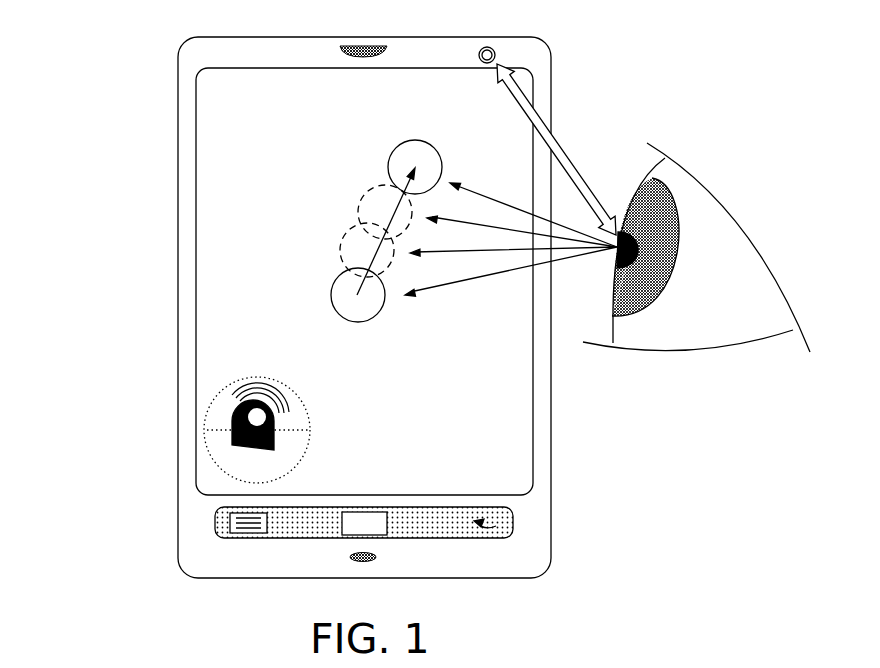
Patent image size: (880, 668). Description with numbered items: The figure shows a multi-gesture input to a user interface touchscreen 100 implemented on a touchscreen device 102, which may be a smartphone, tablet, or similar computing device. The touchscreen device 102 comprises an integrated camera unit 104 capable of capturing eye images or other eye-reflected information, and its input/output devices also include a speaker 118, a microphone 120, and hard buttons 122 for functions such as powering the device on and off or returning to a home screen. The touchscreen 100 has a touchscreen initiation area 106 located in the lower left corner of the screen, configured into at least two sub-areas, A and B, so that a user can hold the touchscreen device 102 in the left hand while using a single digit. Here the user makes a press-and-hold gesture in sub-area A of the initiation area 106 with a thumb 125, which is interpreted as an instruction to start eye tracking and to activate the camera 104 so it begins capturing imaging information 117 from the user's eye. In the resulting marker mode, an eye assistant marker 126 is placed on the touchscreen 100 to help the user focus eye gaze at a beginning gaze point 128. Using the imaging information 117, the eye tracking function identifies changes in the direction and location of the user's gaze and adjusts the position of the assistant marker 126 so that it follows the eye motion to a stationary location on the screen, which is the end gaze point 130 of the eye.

The user interface touchscreen 100 is at (196, 172).
The touchscreen device 102 is at (112, 64).
The camera unit 104 is at (494, 48).
The touchscreen initiation area 106 is at (214, 399).
The imaging information 117 is at (558, 143).
The speaker 118 is at (346, 46).
The microphone 120 is at (358, 563).
The hard buttons 122 is at (215, 529).
The thumb 125 is at (241, 445).
The eye assistant marker 126 is at (393, 155).
The beginning gaze point 128 is at (447, 289).
The end gaze point 130 is at (477, 184).